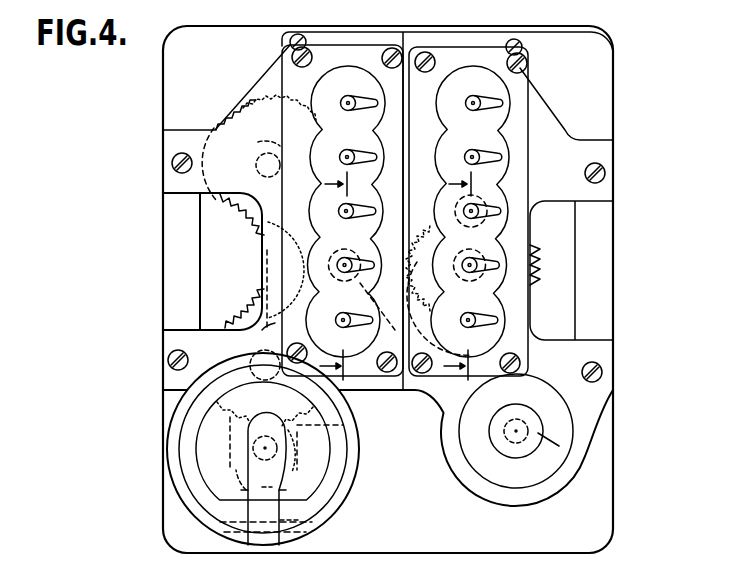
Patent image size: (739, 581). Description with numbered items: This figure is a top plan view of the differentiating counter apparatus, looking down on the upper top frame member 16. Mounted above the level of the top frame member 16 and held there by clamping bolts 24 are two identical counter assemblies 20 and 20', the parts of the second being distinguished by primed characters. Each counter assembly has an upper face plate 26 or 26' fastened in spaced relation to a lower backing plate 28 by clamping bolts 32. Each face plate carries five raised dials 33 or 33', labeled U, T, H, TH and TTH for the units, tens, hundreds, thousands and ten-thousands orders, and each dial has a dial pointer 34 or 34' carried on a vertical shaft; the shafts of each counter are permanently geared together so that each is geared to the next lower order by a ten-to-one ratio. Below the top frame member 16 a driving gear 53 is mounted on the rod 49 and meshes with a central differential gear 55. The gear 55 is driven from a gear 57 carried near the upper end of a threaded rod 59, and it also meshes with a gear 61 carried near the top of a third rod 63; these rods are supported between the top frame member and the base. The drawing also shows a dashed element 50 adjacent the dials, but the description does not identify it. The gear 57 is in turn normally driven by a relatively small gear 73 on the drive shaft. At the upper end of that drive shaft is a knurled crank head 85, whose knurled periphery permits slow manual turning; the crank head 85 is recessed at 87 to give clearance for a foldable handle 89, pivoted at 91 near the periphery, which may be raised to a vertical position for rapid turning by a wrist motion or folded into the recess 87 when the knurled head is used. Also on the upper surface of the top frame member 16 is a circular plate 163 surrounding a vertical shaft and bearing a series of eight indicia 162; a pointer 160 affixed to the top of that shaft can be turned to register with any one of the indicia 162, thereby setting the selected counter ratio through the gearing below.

The top frame member 16 is at (388, 289).
The counter assembly 20 is at (468, 229).
The counter assembly 20' is at (317, 212).
The clamping bolt 24 is at (293, 42).
The upper face plate 26 is at (447, 211).
The upper face plate 26' is at (255, 337).
The lower backing plate 28 is at (382, 380).
The clamping bolt 32 is at (311, 57).
The dial 33 is at (494, 211).
The dial 33' is at (365, 211).
The dial pointer 34 is at (509, 212).
The dial pointer 34' is at (380, 212).
The rod 49 is at (432, 238).
The gear 50 is at (372, 260).
The driving gear 53 is at (534, 266).
The central differential gear 55 is at (272, 251).
The gear 57 is at (239, 300).
The threaded rod 59 is at (262, 372).
The gear 61 is at (236, 220).
The rod 63 is at (259, 147).
The small gear 73 is at (296, 448).
The knurled crank head 85 is at (352, 467).
The recess 87 is at (244, 490).
The foldable handle 89 is at (283, 490).
The pivot 91 is at (286, 520).
The pointer 160 is at (538, 431).
The indicia 162 is at (544, 470).
The circular plate 163 is at (569, 448).